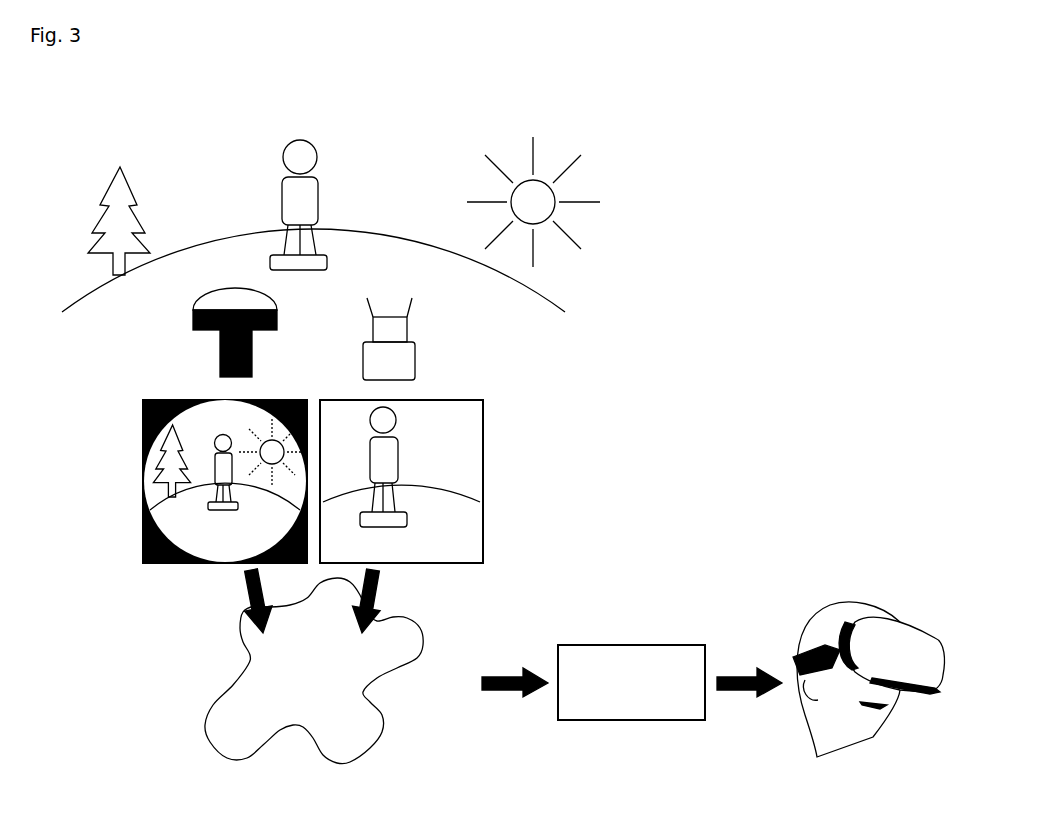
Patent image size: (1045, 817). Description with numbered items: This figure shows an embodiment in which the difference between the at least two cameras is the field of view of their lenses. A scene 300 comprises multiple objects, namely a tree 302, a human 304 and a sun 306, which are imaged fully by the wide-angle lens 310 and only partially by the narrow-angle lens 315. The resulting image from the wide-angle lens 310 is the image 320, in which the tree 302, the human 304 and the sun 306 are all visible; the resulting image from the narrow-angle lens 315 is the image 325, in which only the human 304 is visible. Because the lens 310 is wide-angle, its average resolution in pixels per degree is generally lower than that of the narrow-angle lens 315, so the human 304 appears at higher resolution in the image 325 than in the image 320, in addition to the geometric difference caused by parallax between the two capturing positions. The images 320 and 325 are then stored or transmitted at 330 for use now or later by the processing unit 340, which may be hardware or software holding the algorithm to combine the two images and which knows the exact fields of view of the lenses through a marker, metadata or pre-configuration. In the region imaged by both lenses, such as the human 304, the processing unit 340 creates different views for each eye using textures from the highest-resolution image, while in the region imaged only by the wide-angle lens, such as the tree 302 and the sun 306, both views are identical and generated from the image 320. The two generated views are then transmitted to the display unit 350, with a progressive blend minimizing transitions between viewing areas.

The scene 300 is at (331, 209).
The tree 302 is at (138, 221).
The human 304 is at (317, 205).
The sun 306 is at (533, 202).
The wide-angle lens 310 is at (237, 333).
The narrow-angle lens 315 is at (403, 339).
The image 320 is at (225, 481).
The image 325 is at (401, 481).
The image storage or transmission 330 is at (314, 666).
The processing unit 340 is at (632, 682).
The display unit 350 is at (868, 679).